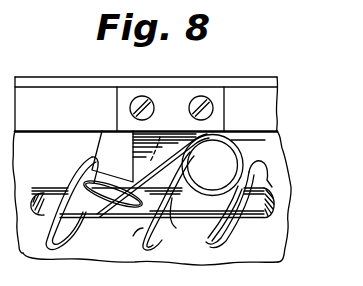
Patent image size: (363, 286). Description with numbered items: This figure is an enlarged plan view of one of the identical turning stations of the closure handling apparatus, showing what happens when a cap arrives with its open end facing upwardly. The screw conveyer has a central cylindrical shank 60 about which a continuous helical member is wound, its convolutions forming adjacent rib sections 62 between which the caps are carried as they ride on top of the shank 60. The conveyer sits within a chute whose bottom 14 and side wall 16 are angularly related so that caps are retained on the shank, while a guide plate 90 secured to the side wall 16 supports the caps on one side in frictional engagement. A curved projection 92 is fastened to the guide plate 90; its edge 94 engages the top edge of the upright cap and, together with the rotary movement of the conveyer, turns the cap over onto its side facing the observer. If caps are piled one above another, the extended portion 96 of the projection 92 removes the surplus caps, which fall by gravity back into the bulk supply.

The bottom wall 14 is at (268, 256).
The side wall 16 is at (88, 82).
The central cylindrical shank 60 is at (249, 217).
The helical rib sections 62 is at (203, 238).
The guide plate 90 is at (262, 107).
The curved projection 92 is at (136, 160).
The edge of the projection 94 is at (265, 140).
The extended portion of the projection 96 is at (84, 208).